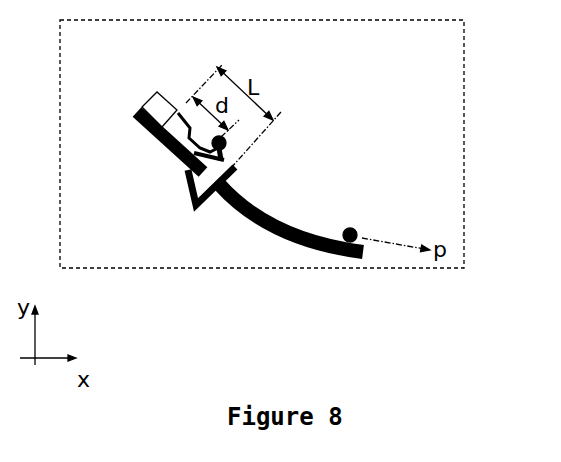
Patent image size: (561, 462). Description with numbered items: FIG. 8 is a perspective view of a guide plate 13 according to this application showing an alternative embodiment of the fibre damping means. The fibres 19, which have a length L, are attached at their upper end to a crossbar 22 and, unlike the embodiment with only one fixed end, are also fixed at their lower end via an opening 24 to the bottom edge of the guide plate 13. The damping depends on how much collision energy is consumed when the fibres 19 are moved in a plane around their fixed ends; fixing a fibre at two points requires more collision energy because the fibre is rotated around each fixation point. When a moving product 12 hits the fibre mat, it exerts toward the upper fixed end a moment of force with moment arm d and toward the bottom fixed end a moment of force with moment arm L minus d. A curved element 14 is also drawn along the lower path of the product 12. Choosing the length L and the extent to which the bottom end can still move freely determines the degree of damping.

The product 12 is at (224, 143).
The guide plate 13 is at (378, 270).
The curved guide rail 14 is at (223, 193).
The fibres 19 is at (188, 187).
The crossbar 22 is at (162, 105).
The opening 24 is at (232, 181).